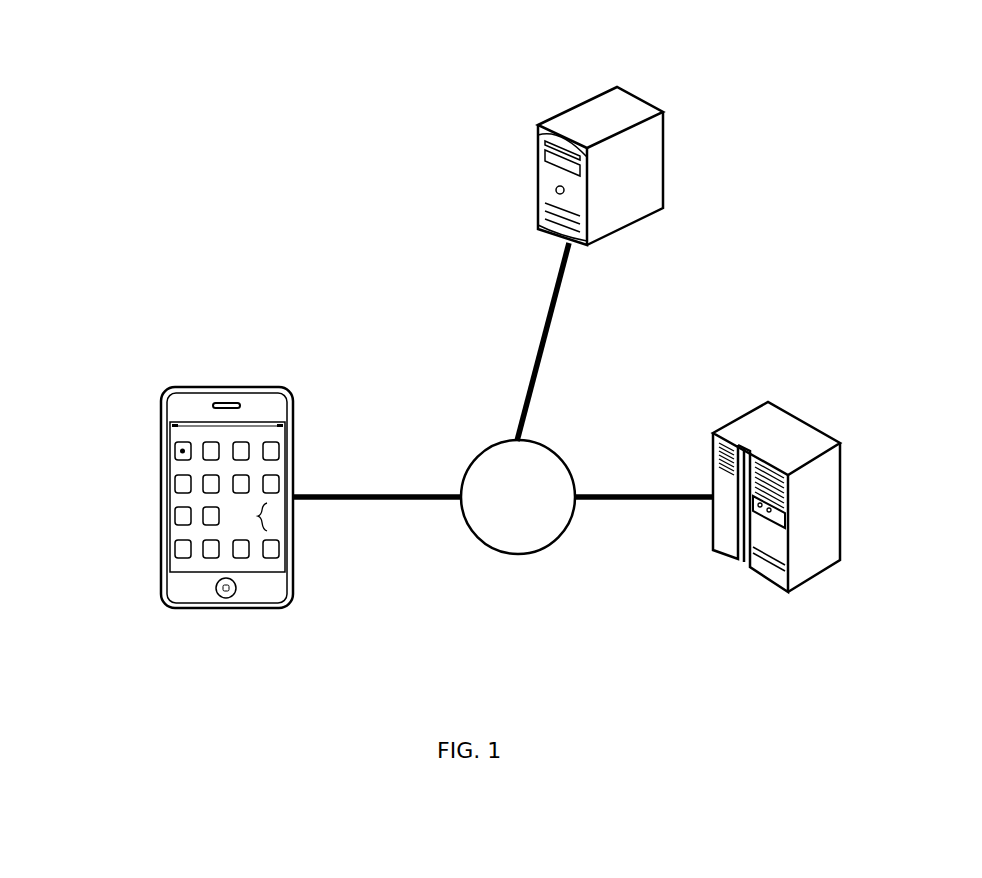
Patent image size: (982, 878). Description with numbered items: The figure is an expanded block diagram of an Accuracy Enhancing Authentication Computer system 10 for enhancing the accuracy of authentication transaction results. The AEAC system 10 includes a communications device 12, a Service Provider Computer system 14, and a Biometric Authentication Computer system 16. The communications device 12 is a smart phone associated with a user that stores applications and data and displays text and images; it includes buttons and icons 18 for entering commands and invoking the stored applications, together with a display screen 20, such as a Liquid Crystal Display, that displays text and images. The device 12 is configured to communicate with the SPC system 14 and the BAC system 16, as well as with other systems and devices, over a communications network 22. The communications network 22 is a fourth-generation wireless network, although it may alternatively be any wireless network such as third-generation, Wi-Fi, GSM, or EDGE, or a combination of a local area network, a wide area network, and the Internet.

The Accuracy Enhancing Authentication Computer system 10 is at (176, 78).
The communications device 12 is at (227, 388).
The Service Provider Computer system 14 is at (538, 152).
The Biometric Authentication Computer system 16 is at (768, 401).
The buttons and icons 18 is at (182, 451).
The display screen 20 is at (266, 517).
The communications network 22 is at (482, 448).